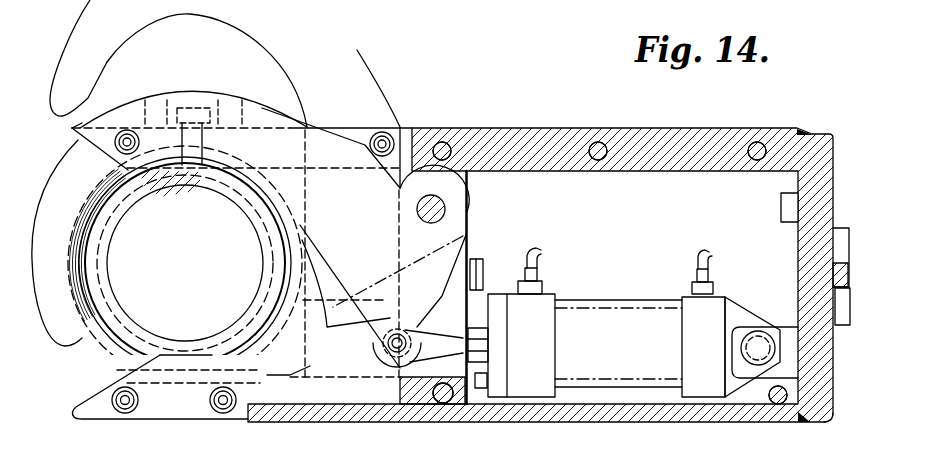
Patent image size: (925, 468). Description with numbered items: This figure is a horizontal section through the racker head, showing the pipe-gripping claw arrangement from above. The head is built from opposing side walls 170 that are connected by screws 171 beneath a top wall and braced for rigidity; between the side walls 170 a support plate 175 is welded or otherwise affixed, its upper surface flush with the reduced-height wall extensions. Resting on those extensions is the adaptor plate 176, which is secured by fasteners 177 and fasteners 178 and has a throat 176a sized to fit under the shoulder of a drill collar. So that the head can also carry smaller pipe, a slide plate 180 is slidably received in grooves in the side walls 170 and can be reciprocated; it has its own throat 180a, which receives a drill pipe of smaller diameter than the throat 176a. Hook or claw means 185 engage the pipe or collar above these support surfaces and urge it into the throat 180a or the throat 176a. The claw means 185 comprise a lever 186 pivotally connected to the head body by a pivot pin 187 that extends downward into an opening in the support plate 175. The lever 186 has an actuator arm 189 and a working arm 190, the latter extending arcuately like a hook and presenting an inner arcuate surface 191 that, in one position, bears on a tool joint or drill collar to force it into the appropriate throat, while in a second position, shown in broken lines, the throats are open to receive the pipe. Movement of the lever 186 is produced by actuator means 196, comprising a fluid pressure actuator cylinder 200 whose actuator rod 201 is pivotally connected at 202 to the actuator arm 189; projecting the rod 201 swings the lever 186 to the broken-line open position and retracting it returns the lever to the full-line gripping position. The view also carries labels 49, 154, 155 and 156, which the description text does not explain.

The cutting head assembly 49 is at (103, 338).
The frame bottom corner 154 is at (822, 405).
The stop member 155 is at (835, 258).
The adjusting screw 156 is at (849, 233).
The side walls 170 is at (540, 130).
The screws 171 is at (759, 142).
The support plate 175 is at (470, 250).
The adaptor plate 176 is at (302, 390).
The throat 176a is at (277, 320).
The fasteners 177 is at (207, 405).
The fasteners 178 is at (393, 133).
The slide plate 180 is at (283, 263).
The throat 180a is at (240, 236).
The hook or claw means 185 is at (290, 67).
The lever 186 is at (404, 160).
The pivot pin 187 is at (447, 200).
The actuator arm 189 is at (463, 236).
The working arm 190 is at (133, 107).
The inner arcuate surface 191 is at (83, 263).
The actuator means 196 is at (615, 300).
The fluid pressure actuator cylinder 200 is at (643, 322).
The actuator rod 201 is at (448, 404).
The pivotal connection 202 is at (397, 350).